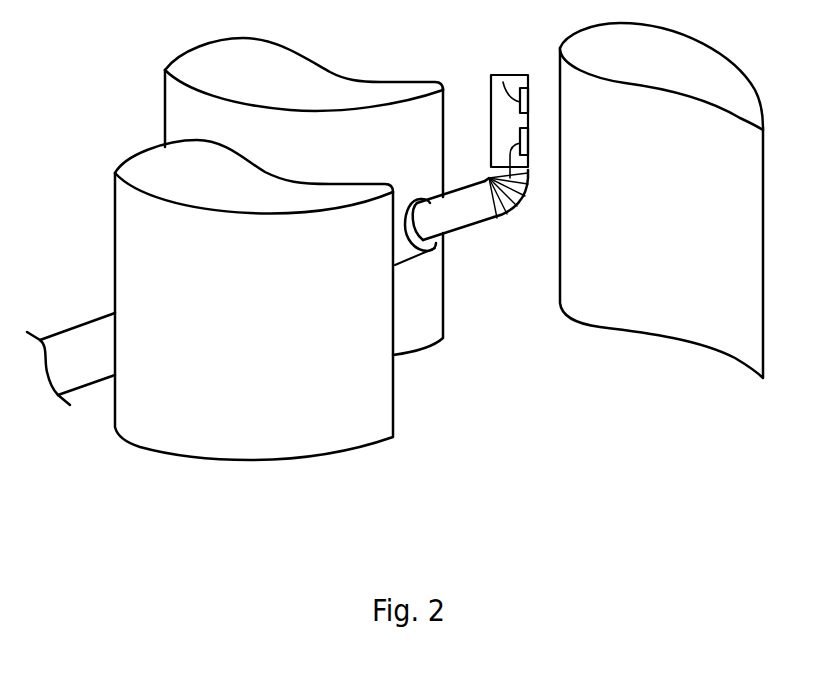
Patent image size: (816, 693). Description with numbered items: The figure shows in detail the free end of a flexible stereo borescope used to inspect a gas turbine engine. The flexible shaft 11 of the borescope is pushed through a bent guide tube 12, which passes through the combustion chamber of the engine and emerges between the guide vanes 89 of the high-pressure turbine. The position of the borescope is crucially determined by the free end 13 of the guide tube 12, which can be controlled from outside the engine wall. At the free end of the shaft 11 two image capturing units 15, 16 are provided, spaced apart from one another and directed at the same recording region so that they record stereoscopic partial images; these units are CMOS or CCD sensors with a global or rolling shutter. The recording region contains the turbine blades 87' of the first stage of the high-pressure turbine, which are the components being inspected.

The shaft 11 is at (462, 212).
The guide tube 12 is at (78, 332).
The free end 13 is at (405, 248).
The image capturing unit 15 is at (517, 208).
The image capturing unit 16 is at (503, 82).
The guide vanes 89 is at (252, 330).
The turbine blades 87' is at (661, 200).